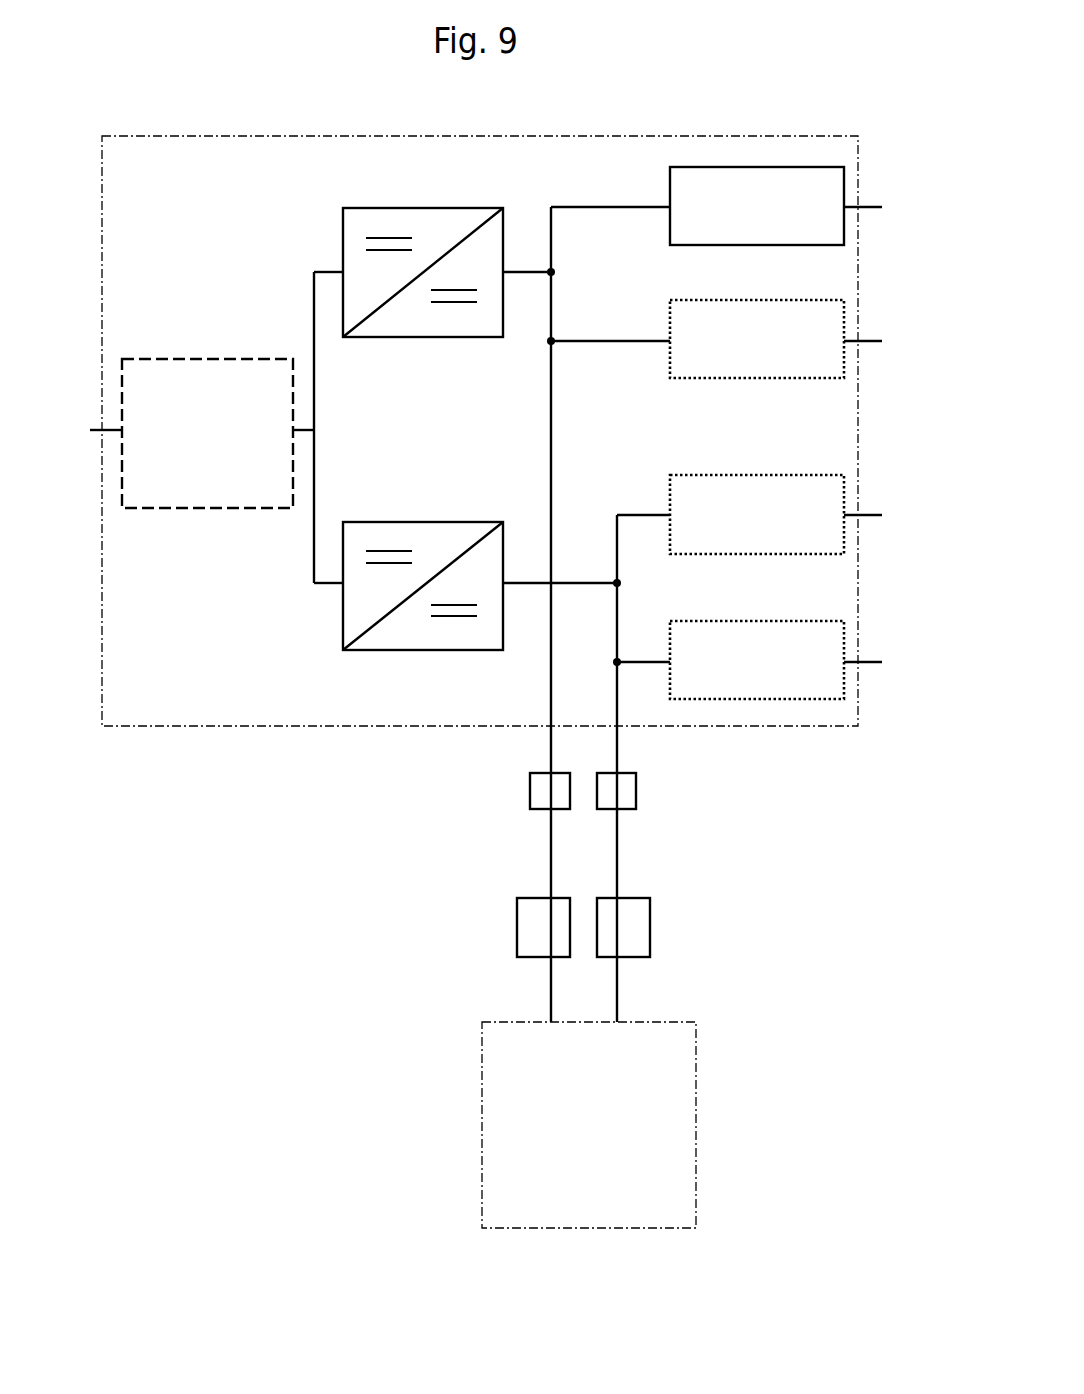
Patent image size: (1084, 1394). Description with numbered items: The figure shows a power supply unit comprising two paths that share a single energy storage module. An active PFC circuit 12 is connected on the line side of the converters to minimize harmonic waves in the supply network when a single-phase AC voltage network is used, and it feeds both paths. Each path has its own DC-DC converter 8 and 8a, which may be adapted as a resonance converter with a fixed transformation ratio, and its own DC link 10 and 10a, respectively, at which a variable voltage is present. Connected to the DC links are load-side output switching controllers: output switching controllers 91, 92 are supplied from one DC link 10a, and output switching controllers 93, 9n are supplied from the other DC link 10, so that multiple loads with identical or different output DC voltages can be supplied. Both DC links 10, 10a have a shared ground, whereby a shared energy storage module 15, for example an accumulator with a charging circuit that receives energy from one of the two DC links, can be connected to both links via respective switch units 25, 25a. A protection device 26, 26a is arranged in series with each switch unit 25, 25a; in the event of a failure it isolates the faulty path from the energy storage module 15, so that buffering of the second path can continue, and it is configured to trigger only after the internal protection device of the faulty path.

The DC-DC converter 8 is at (421, 522).
The DC-DC converter 8a is at (420, 208).
The DC link 10 is at (617, 622).
The DC link 10a is at (551, 341).
The active PFC circuit 12 is at (212, 359).
The shared energy storage module 15 is at (696, 1133).
The switch unit 25 is at (650, 916).
The switch unit 25a is at (517, 918).
The protection device 26 is at (636, 791).
The protection device 26a is at (530, 791).
The output switching controller 91 is at (845, 190).
The output switching controller 92 is at (845, 320).
The output switching controller 93 is at (845, 493).
The output switching controller 9n is at (845, 640).